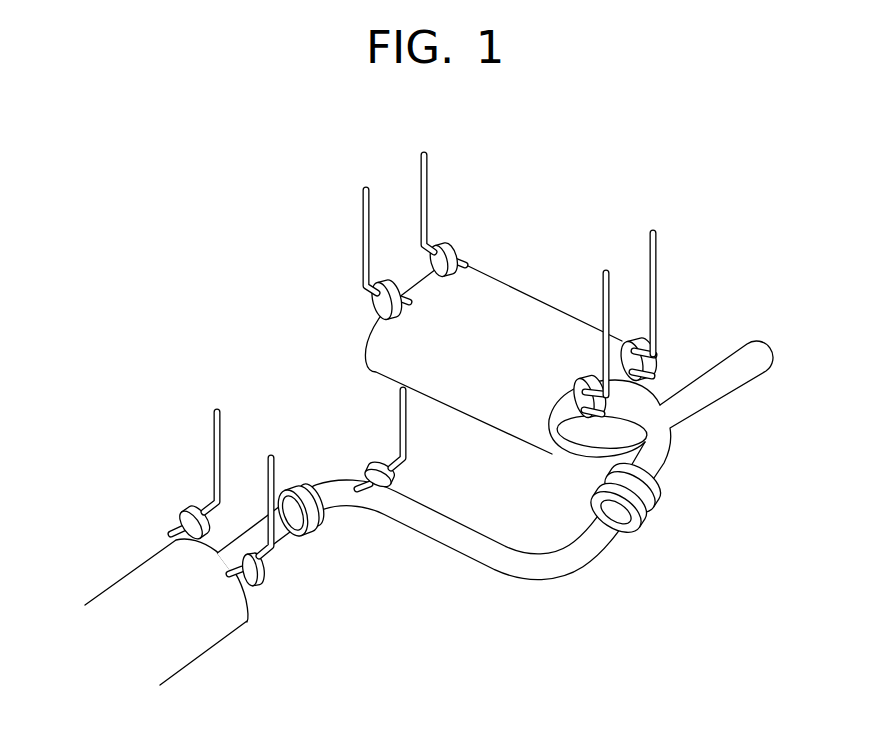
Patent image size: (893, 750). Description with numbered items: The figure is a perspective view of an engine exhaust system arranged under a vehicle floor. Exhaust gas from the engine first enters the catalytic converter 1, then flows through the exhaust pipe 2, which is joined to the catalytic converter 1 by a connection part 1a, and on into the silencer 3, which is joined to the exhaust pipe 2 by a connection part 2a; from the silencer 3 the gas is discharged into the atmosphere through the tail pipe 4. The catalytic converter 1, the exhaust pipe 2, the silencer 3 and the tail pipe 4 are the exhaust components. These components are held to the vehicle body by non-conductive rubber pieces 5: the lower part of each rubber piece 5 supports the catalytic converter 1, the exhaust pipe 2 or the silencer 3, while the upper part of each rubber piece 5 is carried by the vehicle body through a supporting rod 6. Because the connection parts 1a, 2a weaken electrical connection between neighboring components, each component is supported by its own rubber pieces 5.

The catalytic converter 1 is at (133, 588).
The connection part 1a is at (318, 517).
The exhaust pipe 2 is at (481, 558).
The connection part 2a is at (648, 517).
The silencer 3 is at (505, 297).
The tail pipe 4 is at (715, 389).
The rubber piece 5 is at (190, 510).
The supporting rod 6 is at (365, 210).